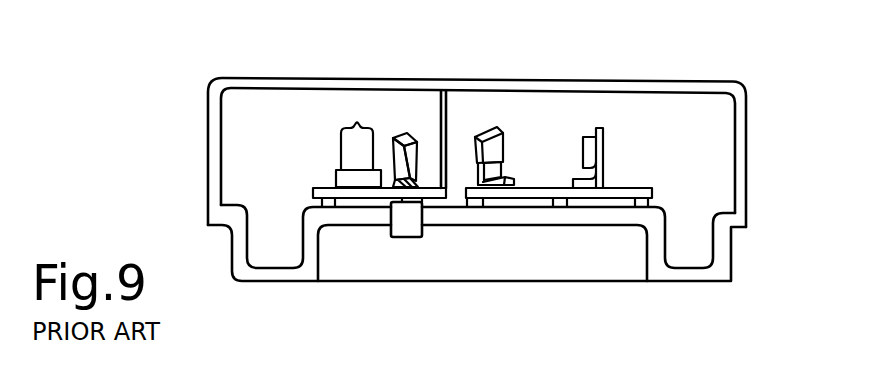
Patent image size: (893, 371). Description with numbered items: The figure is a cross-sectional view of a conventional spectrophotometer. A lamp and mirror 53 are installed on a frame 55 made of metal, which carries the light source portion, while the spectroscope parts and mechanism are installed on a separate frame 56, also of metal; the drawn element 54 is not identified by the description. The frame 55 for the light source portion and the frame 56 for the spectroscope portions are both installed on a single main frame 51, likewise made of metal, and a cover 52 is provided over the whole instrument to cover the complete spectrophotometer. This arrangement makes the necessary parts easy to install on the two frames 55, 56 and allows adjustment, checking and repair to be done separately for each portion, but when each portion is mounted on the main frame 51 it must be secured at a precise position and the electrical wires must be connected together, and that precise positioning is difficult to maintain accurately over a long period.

The main frame 51 is at (723, 262).
The cover 52 is at (747, 120).
The lamp and mirror 53 is at (338, 122).
The second circuit unit 54 is at (467, 122).
The frame for the light source portion 55 is at (313, 193).
The frame for spectroscope portions 56 is at (537, 198).